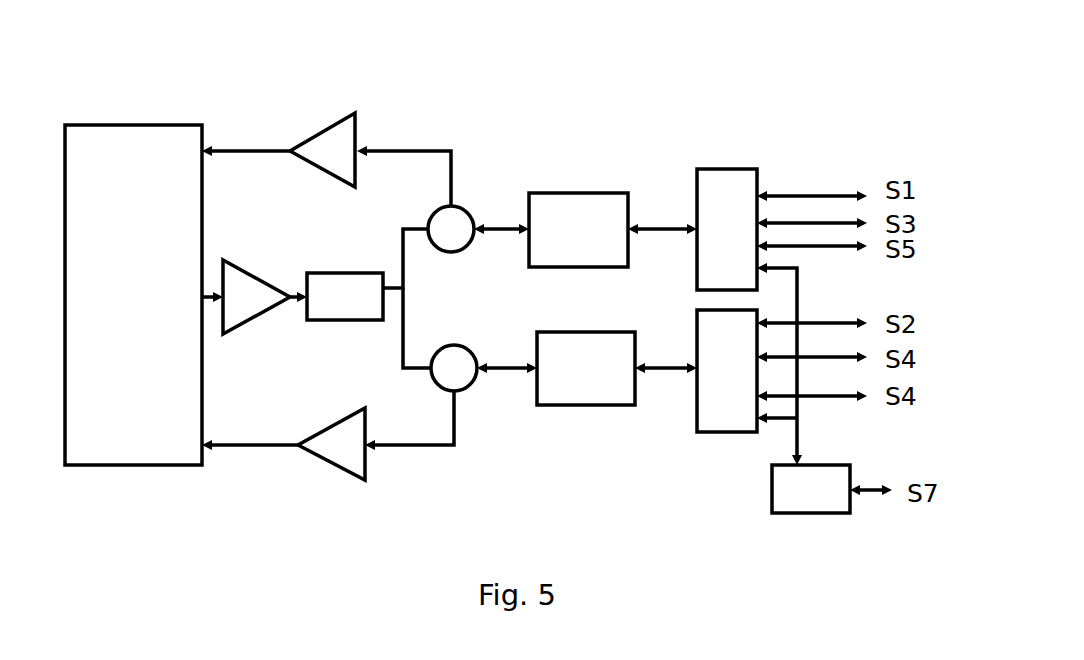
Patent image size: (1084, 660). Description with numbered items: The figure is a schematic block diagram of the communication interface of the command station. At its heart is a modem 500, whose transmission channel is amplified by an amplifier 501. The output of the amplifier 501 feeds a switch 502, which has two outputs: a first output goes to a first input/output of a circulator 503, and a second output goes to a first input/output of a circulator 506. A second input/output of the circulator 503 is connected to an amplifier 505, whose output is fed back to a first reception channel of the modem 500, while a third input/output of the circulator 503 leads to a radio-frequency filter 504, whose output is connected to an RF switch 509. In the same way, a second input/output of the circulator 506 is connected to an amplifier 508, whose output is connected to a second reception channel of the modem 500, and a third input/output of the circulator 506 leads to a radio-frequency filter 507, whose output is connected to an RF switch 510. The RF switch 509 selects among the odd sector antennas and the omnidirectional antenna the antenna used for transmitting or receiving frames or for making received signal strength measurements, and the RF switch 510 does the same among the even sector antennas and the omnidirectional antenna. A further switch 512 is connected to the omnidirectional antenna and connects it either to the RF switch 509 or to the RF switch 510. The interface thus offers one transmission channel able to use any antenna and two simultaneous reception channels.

The modem 500 is at (162, 125).
The amplifier 501 is at (263, 280).
The switch 502 is at (348, 272).
The circulator 503 is at (428, 215).
The radio-frequency filter 504 is at (572, 193).
The amplifier 505 is at (317, 132).
The circulator 506 is at (459, 345).
The radio-frequency filter 507 is at (575, 332).
The amplifier 508 is at (332, 423).
The RF switch 509 is at (714, 169).
The RF switch 510 is at (697, 338).
The switch 512 is at (815, 513).